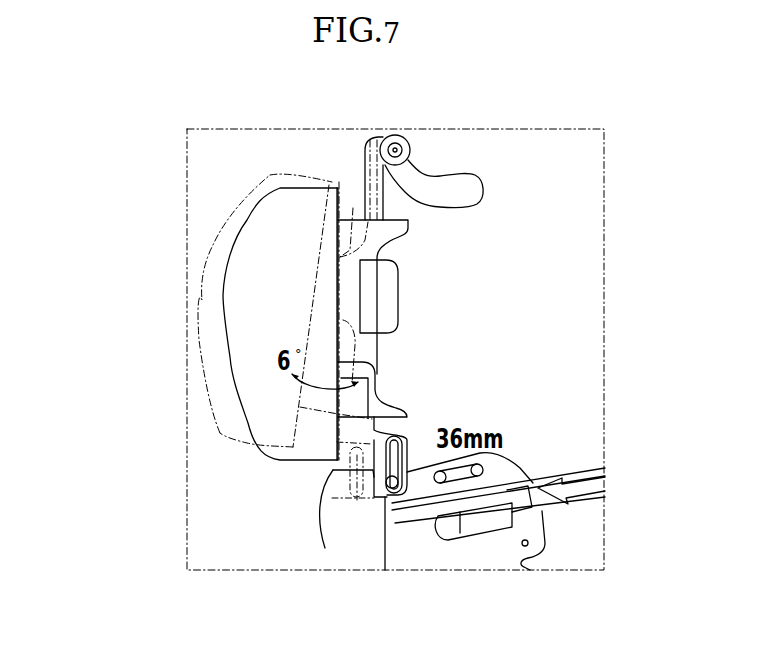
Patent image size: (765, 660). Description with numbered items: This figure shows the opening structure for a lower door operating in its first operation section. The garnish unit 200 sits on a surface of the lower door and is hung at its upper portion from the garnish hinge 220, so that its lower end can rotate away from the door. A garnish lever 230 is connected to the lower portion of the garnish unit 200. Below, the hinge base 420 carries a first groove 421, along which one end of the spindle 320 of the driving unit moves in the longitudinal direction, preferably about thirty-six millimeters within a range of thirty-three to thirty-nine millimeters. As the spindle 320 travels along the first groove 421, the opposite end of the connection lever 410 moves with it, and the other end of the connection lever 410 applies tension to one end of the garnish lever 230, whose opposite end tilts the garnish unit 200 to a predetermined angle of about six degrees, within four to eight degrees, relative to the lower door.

The garnish unit 200 is at (240, 320).
The garnish hinge 220 is at (428, 180).
The garnish lever 230 is at (325, 548).
The spindle 320 is at (540, 486).
The connection lever 410 is at (405, 470).
The hinge base 420 is at (403, 537).
The first groove 421 is at (443, 540).